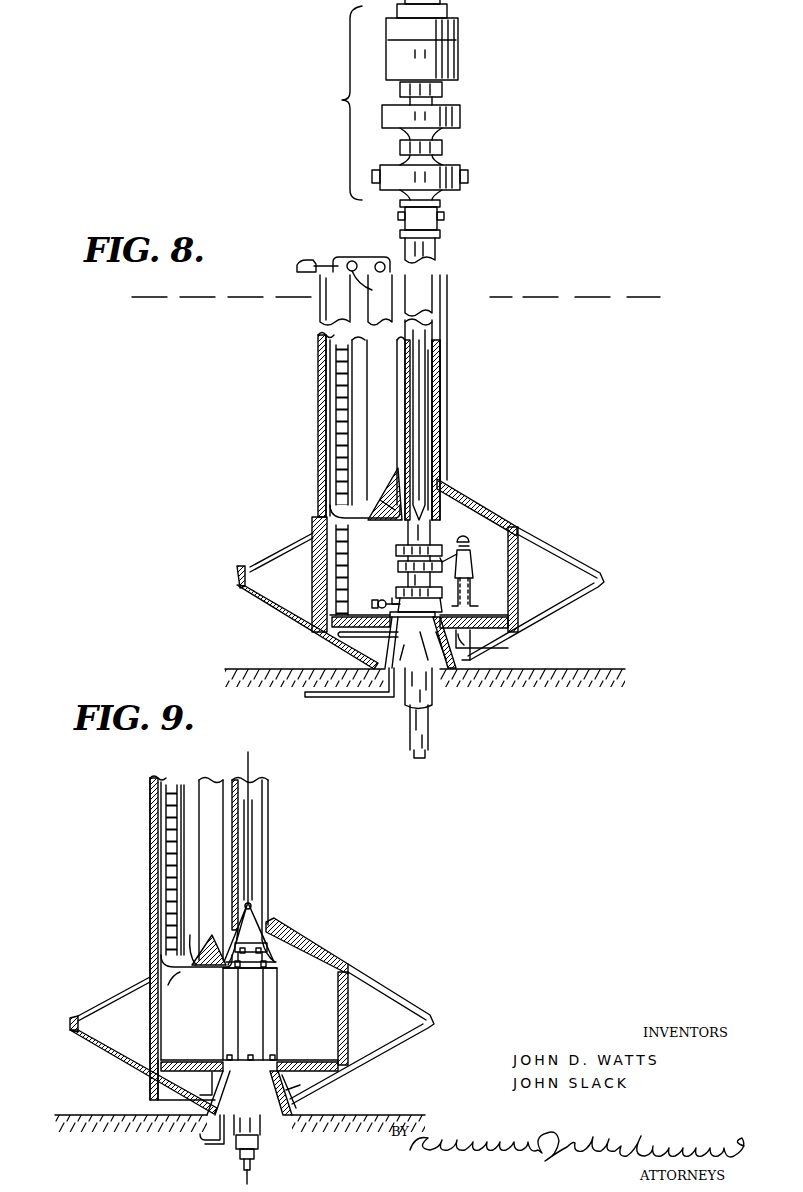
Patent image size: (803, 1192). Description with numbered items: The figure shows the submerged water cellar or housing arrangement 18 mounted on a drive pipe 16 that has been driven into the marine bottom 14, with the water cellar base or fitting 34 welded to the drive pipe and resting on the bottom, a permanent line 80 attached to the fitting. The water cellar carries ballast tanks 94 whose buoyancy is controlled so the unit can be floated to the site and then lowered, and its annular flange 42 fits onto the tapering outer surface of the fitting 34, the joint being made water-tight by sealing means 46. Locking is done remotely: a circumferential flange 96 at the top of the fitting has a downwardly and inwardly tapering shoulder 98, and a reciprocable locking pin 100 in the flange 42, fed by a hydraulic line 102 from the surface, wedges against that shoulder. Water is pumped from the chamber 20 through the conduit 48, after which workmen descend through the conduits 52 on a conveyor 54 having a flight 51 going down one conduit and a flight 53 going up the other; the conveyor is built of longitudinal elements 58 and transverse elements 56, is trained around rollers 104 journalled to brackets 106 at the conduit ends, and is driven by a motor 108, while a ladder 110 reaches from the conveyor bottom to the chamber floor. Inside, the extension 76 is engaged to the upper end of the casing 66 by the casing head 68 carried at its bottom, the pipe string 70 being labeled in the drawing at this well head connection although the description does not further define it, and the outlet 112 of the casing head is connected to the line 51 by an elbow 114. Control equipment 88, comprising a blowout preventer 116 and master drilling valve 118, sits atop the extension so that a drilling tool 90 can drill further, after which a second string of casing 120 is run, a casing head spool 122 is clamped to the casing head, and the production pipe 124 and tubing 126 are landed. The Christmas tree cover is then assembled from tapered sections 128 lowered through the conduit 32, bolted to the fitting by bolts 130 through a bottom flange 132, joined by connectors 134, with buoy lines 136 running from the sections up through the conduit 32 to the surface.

In FIG. 8, the control equipment 88 is at (340, 101).
In FIG. 8, the blowout preventer 116 is at (450, 118).
In FIG. 8, the master drilling valve 118 is at (468, 180).
In FIG. 8, the extension 76 is at (432, 252).
In FIG. 8, the motor 108 is at (296, 258).
In FIG. 8, the rollers 104 is at (378, 263).
In FIG. 9, the rollers 104 is at (150, 984).
In FIG. 8, the brackets 106 is at (392, 505).
In FIG. 9, the brackets 106 is at (200, 958).
In FIG. 8, the hydraulic line 102 is at (447, 306).
In FIG. 8, the conduit 32 is at (443, 356).
In FIG. 9, the conduit 32 is at (268, 825).
In FIG. 8, the drilling tool 90 is at (427, 411).
In FIG. 8, the conduit 52 is at (322, 360).
In FIG. 9, the conduit 52 is at (155, 776).
In FIG. 8, the flight 51 is at (330, 392).
In FIG. 8, the conduit 48 is at (322, 433).
In FIG. 9, the conduit 48 is at (150, 932).
In FIG. 8, the longitudinal elements 58 is at (333, 452).
In FIG. 9, the longitudinal elements 58 is at (182, 785).
In FIG. 8, the flight 53 is at (392, 504).
In FIG. 8, the conveyor 54 is at (372, 516).
In FIG. 9, the conveyor 54 is at (193, 975).
In FIG. 8, the chamber 20 is at (471, 530).
In FIG. 9, the chamber 20 is at (311, 1014).
In FIG. 8, the ladder 110 is at (350, 562).
In FIG. 8, the pipe string 70 is at (398, 562).
In FIG. 8, the casing head spool 122 is at (416, 578).
In FIG. 8, the casing head 68 is at (420, 604).
In FIG. 8, the outlet 112 is at (390, 598).
In FIG. 8, the elbow 114 is at (372, 598).
In FIG. 8, the ballast tanks 94 is at (268, 578).
In FIG. 9, the ballast tanks 94 is at (124, 1032).
In FIG. 8, the sealing means 46 is at (378, 640).
In FIG. 9, the sealing means 46 is at (226, 1082).
In FIG. 8, the water cellar base or fitting 34 is at (385, 680).
In FIG. 9, the water cellar base or fitting 34 is at (258, 1104).
In FIG. 8, the circumferential flange 96 is at (403, 645).
In FIG. 8, the shoulder 98 is at (422, 645).
In FIG. 8, the locking pin 100 is at (433, 648).
In FIG. 8, the annular flange 42 is at (468, 645).
In FIG. 9, the annular flange 42 is at (192, 1088).
In FIG. 8, the marine bottom 14 is at (560, 668).
In FIG. 9, the marine bottom 14 is at (98, 1115).
In FIG. 8, the drive pipe 16 is at (433, 688).
In FIG. 9, the drive pipe 16 is at (262, 1130).
In FIG. 8, the permanent line 80 is at (348, 708).
In FIG. 9, the permanent line 80 is at (200, 1140).
In FIG. 8, the casing 66 is at (428, 724).
In FIG. 9, the casing 66 is at (258, 1142).
In FIG. 8, the second string of casing 120 is at (425, 754).
In FIG. 9, the second string of casing 120 is at (240, 1155).
In FIG. 8, the water cellar or housing arrangement 18 is at (528, 494).
In FIG. 9, the water cellar or housing arrangement 18 is at (346, 938).
In FIG. 9, the transverse elements 56 is at (170, 822).
In FIG. 9, the buoy lines 136 is at (255, 775).
In FIG. 9, the connectors 134 is at (268, 972).
In FIG. 9, the sections 128 is at (245, 1028).
In FIG. 9, the bolts 130 is at (232, 1053).
In FIG. 9, the flange 132 is at (304, 1091).
In FIG. 9, the production pipe 124 is at (252, 1164).
In FIG. 9, the tubing 126 is at (249, 1181).